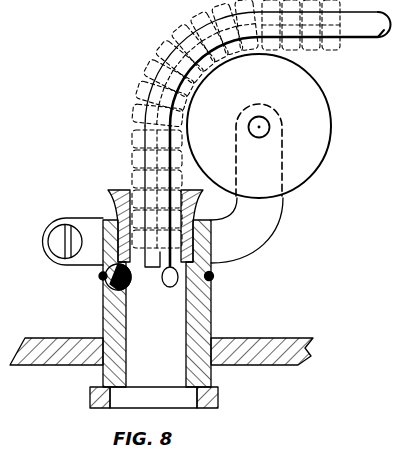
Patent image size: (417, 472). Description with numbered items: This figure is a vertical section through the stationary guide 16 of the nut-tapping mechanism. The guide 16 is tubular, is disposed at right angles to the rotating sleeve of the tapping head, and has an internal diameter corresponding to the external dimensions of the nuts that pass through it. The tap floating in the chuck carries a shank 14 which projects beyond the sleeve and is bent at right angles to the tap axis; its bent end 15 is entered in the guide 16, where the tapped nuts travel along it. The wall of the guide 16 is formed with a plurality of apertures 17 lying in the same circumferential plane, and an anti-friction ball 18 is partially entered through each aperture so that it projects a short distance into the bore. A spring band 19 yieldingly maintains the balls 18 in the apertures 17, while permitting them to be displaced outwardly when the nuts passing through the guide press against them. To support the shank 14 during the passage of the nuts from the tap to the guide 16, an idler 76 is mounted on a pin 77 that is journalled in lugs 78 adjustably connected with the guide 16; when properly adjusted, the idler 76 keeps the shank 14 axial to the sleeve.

The shank 14 is at (370, 40).
The bent end 15 is at (155, 178).
The stationary guide 16 is at (103, 313).
The apertures 17 is at (100, 276).
The anti-friction ball 18 is at (108, 285).
The spring band 19 is at (100, 279).
The idler 76 is at (267, 143).
The pin 77 is at (276, 126).
The lugs 78 is at (226, 226).